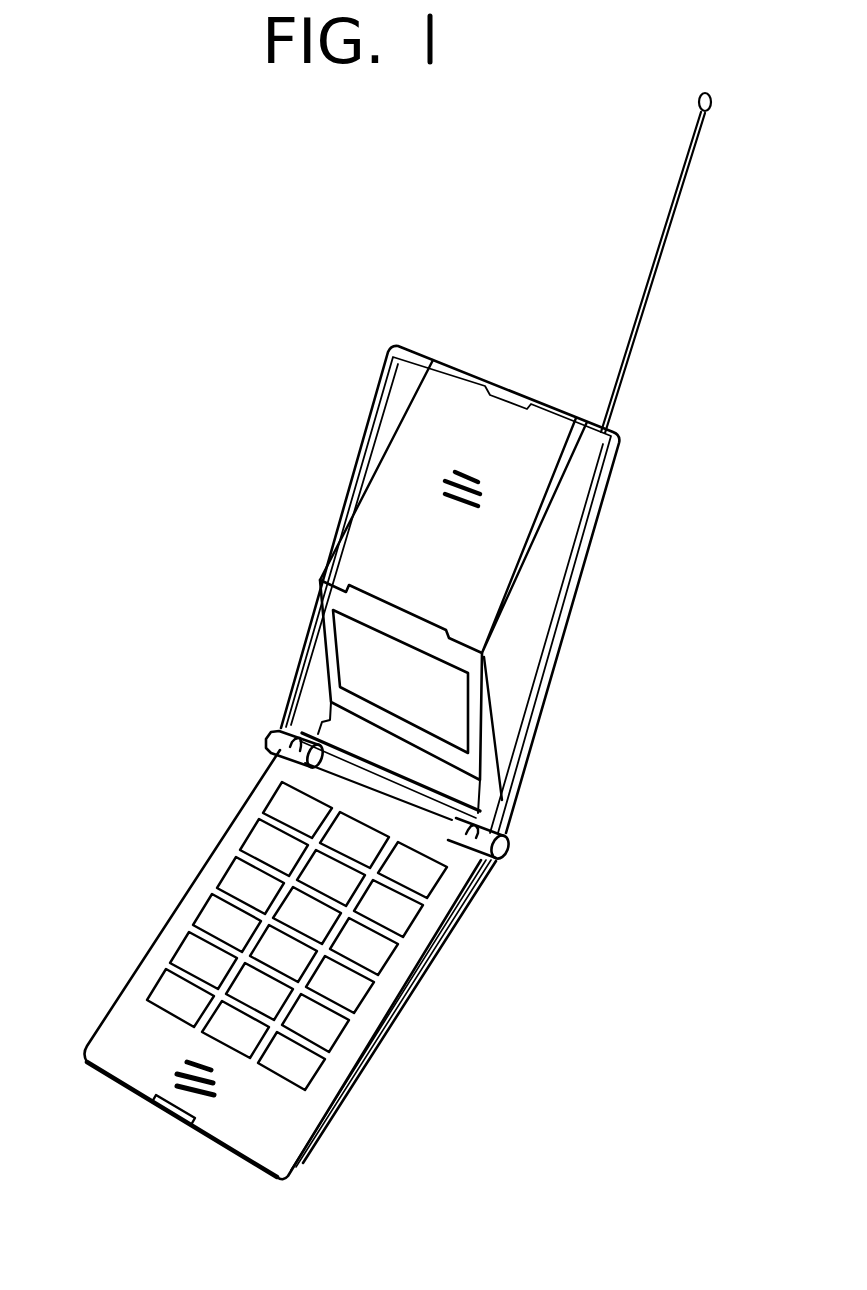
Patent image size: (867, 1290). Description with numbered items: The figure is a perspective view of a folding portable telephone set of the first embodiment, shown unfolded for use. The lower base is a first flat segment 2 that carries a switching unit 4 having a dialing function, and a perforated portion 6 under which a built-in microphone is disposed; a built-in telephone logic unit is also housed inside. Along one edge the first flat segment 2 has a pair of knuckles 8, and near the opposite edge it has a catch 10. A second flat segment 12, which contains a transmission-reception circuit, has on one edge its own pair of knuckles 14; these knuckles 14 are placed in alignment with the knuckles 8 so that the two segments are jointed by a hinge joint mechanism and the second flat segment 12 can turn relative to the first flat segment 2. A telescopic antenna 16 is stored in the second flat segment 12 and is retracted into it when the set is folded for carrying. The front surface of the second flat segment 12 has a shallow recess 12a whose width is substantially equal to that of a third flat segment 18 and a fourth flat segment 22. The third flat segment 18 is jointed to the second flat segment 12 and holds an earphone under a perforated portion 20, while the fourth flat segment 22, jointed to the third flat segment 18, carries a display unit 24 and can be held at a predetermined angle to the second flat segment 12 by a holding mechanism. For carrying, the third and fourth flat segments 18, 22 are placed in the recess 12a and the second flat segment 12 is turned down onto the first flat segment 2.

The first flat segment 2 is at (372, 1003).
The switching unit 4 is at (235, 880).
The perforated portion 6 is at (183, 1072).
The knuckles 8 is at (278, 740).
The catch 10 is at (160, 1107).
The second flat segment 12 is at (553, 593).
The shallow recess 12a is at (503, 660).
The knuckles 14 is at (303, 742).
The telescopic antenna 16 is at (660, 237).
The third flat segment 18 is at (393, 468).
The perforated portion 20 is at (478, 503).
The fourth flat segment 22 is at (322, 618).
The display unit 24 is at (372, 658).